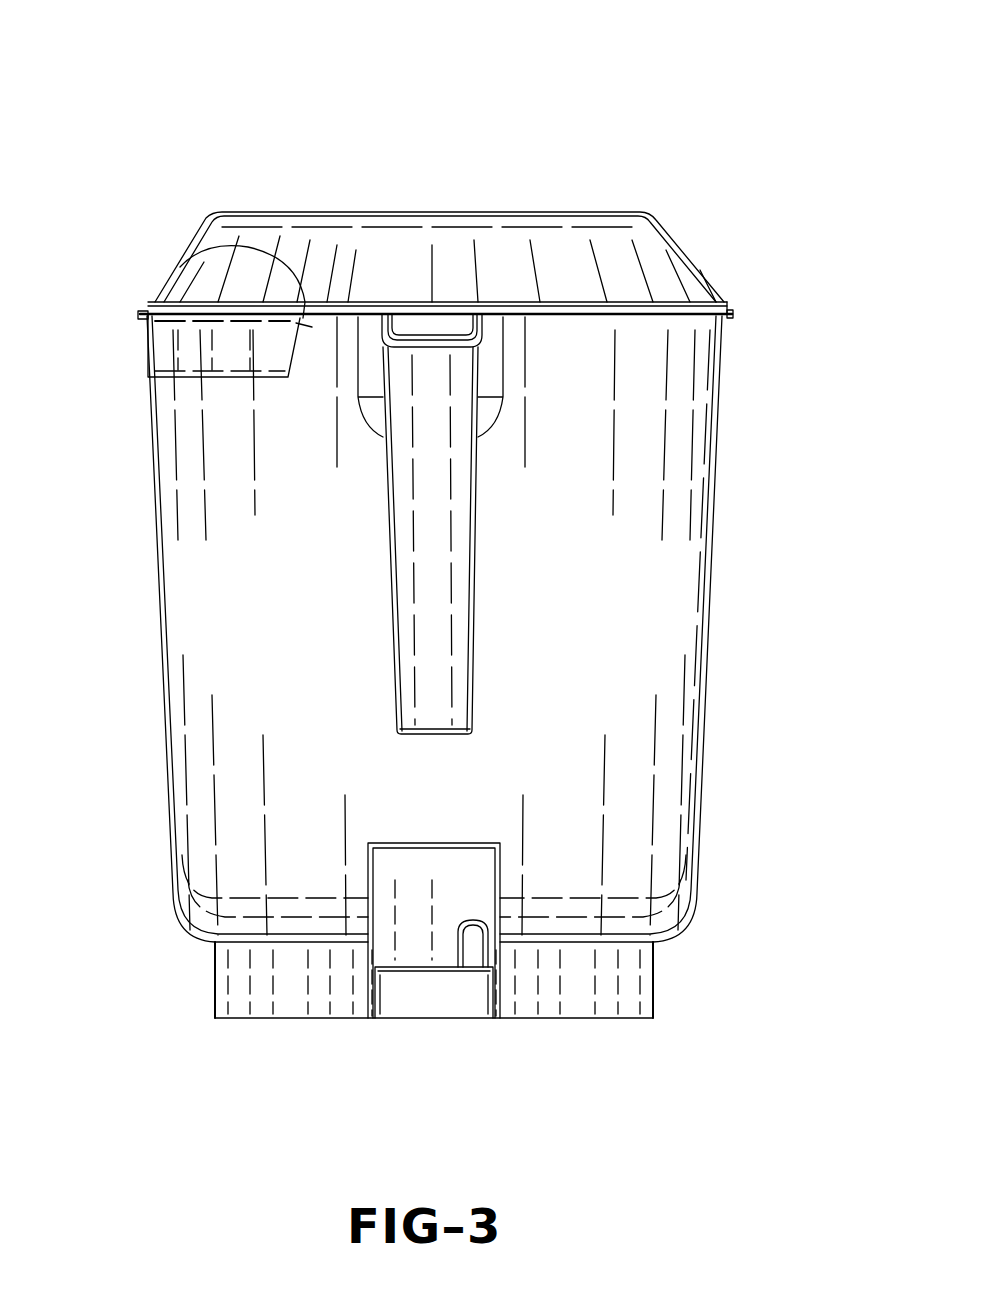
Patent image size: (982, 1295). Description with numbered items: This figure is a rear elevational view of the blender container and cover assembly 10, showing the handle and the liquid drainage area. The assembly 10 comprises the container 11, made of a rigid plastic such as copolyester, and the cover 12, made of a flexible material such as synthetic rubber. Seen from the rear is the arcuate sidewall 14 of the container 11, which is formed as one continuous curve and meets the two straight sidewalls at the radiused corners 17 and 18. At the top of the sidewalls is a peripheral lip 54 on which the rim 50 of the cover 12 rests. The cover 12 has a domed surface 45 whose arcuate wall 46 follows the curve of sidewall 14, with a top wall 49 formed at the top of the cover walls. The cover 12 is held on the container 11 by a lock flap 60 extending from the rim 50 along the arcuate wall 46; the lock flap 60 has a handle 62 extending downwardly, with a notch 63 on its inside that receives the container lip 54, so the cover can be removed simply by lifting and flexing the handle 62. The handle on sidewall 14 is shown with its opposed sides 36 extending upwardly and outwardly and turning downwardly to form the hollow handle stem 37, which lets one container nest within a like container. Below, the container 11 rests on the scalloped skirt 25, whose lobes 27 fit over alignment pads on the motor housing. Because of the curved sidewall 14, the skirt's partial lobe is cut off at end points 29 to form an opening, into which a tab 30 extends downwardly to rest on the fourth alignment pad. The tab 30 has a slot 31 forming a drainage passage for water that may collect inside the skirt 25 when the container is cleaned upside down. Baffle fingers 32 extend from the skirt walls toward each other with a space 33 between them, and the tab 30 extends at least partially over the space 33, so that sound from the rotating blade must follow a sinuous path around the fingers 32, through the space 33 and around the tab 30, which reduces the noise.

The blender container and cover assembly 10 is at (76, 109).
The container 11 is at (714, 500).
The cover 12 is at (263, 211).
The sidewall 14 is at (600, 626).
The radiused corner 17 is at (163, 668).
The radiused corner 18 is at (707, 730).
The skirt 25 is at (298, 1020).
The lobe 27 is at (215, 985).
The end point 29 is at (372, 1002).
The tab 30 is at (430, 990).
The slot 31 is at (462, 958).
The finger 32 is at (396, 1000).
The space 33 is at (407, 930).
The side 36 is at (381, 315).
The handle stem 37 is at (415, 543).
The domed surface 45 is at (648, 263).
The arcuate wall 46 is at (432, 245).
The top wall 49 is at (410, 213).
The rim 50 is at (142, 311).
The peripheral lip 54 is at (693, 317).
The lock flap 60 is at (147, 346).
The handle 62 is at (227, 360).
The notch 63 is at (180, 267).